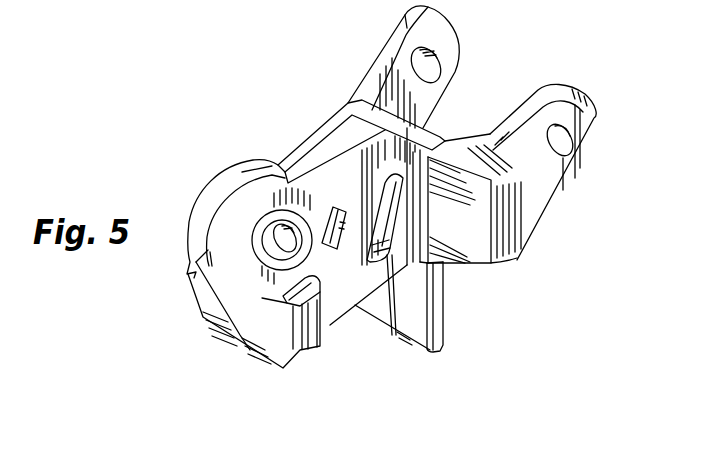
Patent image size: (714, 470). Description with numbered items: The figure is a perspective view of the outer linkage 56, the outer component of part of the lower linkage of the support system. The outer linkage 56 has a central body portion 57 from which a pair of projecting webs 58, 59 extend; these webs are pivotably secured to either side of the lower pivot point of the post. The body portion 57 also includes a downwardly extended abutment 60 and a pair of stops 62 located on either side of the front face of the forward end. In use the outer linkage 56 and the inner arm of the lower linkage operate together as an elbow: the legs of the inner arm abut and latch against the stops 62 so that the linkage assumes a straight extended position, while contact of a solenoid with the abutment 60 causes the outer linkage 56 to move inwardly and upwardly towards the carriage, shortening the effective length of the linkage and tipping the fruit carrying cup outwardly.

The outer linkage 56 is at (313, 153).
The central body portion 57 is at (348, 282).
The projecting web 58 is at (441, 33).
The projecting web 59 is at (553, 178).
The abutment 60 is at (436, 322).
The stop 62 is at (320, 340).